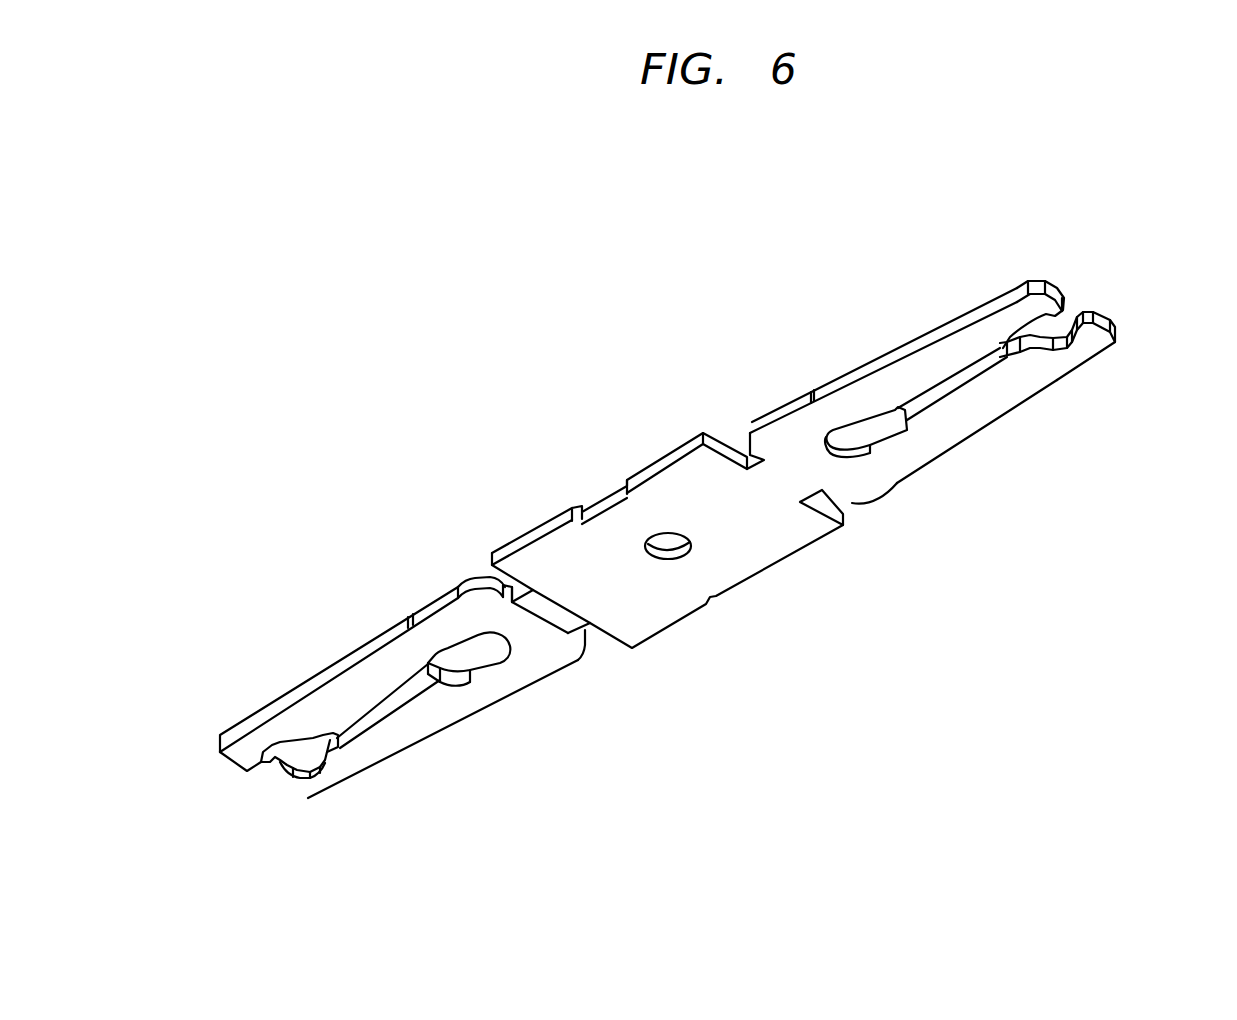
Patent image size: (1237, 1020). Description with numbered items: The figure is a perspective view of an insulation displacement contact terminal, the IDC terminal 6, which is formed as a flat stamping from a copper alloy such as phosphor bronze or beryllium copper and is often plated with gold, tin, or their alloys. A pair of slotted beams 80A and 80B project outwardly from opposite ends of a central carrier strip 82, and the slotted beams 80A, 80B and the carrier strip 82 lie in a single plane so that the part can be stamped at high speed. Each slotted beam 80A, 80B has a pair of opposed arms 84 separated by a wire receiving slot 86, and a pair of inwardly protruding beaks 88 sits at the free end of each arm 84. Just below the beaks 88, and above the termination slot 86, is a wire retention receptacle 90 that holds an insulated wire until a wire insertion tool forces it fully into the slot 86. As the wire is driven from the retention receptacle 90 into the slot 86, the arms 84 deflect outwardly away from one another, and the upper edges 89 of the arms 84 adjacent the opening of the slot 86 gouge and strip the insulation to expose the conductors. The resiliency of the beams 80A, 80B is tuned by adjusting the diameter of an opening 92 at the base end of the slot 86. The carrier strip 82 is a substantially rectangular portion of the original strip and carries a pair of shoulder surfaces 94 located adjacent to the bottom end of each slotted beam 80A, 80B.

The IDC terminal 6 is at (699, 431).
The slotted beam 80A is at (988, 392).
The slotted beam 80B is at (927, 373).
The central carrier strip 82 is at (665, 610).
The opposed arms 84 is at (355, 682).
The wire receiving slot 86 is at (402, 702).
The inwardly protruding beaks 88 is at (289, 793).
The upper edges 89 is at (337, 743).
The wire retention receptacle 90 is at (286, 754).
The opening 92 is at (473, 653).
The shoulder surfaces 94 is at (845, 522).